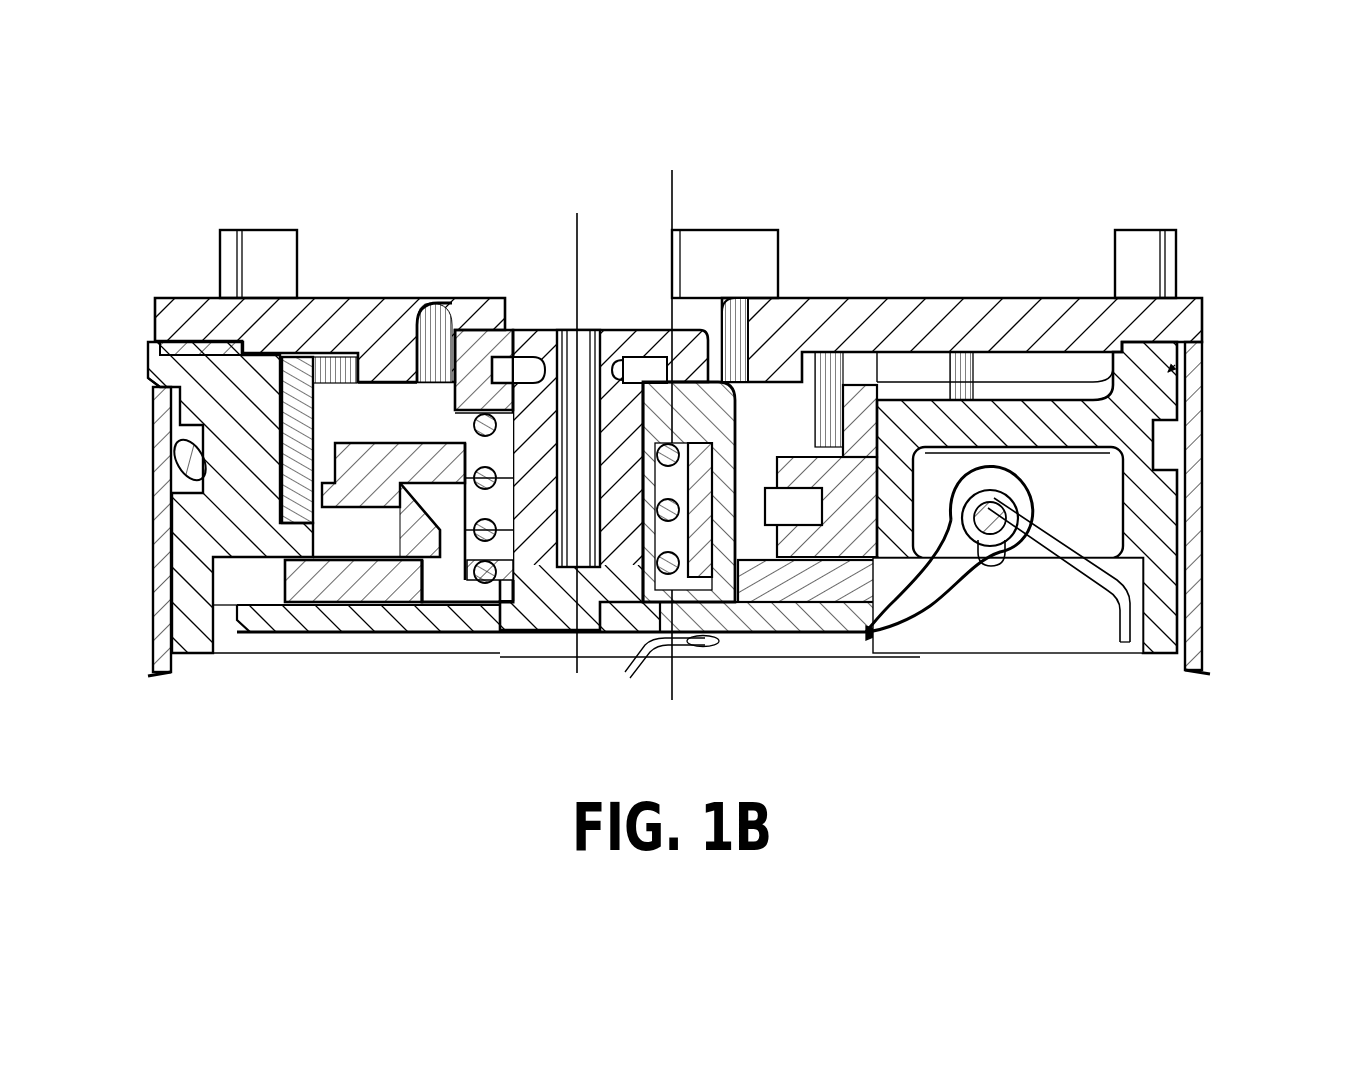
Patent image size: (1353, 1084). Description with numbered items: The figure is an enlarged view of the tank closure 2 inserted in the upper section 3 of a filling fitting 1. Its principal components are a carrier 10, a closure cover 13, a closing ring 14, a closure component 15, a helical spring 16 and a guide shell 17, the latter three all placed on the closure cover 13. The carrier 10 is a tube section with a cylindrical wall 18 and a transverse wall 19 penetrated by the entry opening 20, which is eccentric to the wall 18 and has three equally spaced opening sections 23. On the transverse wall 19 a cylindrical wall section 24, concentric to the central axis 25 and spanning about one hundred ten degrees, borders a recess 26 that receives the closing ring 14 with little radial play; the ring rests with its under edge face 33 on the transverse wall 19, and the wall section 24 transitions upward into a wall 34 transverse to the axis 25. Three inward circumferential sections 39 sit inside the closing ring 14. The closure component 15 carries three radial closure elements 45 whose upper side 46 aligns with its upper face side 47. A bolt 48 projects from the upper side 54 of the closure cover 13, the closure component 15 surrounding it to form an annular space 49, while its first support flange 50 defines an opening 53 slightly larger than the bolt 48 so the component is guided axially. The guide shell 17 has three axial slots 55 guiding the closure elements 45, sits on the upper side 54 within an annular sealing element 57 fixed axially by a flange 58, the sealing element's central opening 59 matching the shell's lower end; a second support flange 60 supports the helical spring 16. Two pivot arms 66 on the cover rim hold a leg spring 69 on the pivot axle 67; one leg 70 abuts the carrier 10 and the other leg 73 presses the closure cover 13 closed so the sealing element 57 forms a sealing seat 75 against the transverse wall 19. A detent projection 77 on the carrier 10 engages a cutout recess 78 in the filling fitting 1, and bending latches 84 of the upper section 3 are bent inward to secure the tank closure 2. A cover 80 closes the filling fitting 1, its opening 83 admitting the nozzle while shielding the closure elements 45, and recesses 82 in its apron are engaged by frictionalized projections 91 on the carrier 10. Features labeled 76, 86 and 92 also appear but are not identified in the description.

The filling fitting 1 is at (1208, 436).
The tank closure 2 is at (1245, 275).
The upper section 3 is at (1205, 382).
The carrier 10 is at (1205, 342).
The closure cover 13 is at (878, 640).
The closing ring 14 is at (822, 388).
The closure component 15 is at (470, 460).
The helical spring 16 is at (447, 595).
The guide shell 17 is at (462, 330).
The cylindrical wall 18 is at (218, 496).
The transverse wall 19 is at (826, 503).
The entry opening 20 is at (770, 530).
The opening sections 23 is at (312, 535).
The cylindrical wall section 24 is at (293, 480).
The central longitudinal axis 25 is at (577, 230).
The recess 26 is at (293, 390).
The under edge face 33 is at (870, 575).
The wall 34 is at (1075, 420).
The circumferential sections 39 is at (812, 462).
The closure elements 45 is at (293, 447).
The upper side 46 is at (333, 437).
The upper face side 47 is at (445, 400).
The bolt 48 is at (595, 640).
The annular space 49 is at (520, 587).
The first support flange 50 is at (497, 583).
The opening 53 is at (496, 482).
The upper side 54 is at (832, 600).
The axial slots 55 is at (476, 548).
The annular sealing element 57 is at (288, 570).
The flange 58 is at (689, 505).
The central opening 59 is at (368, 627).
The second support flange 60 is at (497, 357).
The pivot arms 66 is at (977, 583).
The pivot axle 67 is at (1008, 496).
The leg spring 69 is at (972, 470).
The leg 70 is at (1088, 557).
The leg 73 is at (628, 665).
The sealing seat 75 is at (767, 587).
The pocket 76 is at (372, 447).
The detent projection 77 is at (150, 352).
The cutout recess 78 is at (150, 382).
The cover 80 is at (928, 325).
The recesses 82 is at (955, 372).
The opening 83 is at (740, 330).
The bending latches 84 is at (245, 262).
The hole 86 is at (1012, 552).
The frictionalized projections 91 is at (1000, 380).
The axis 92 is at (648, 310).